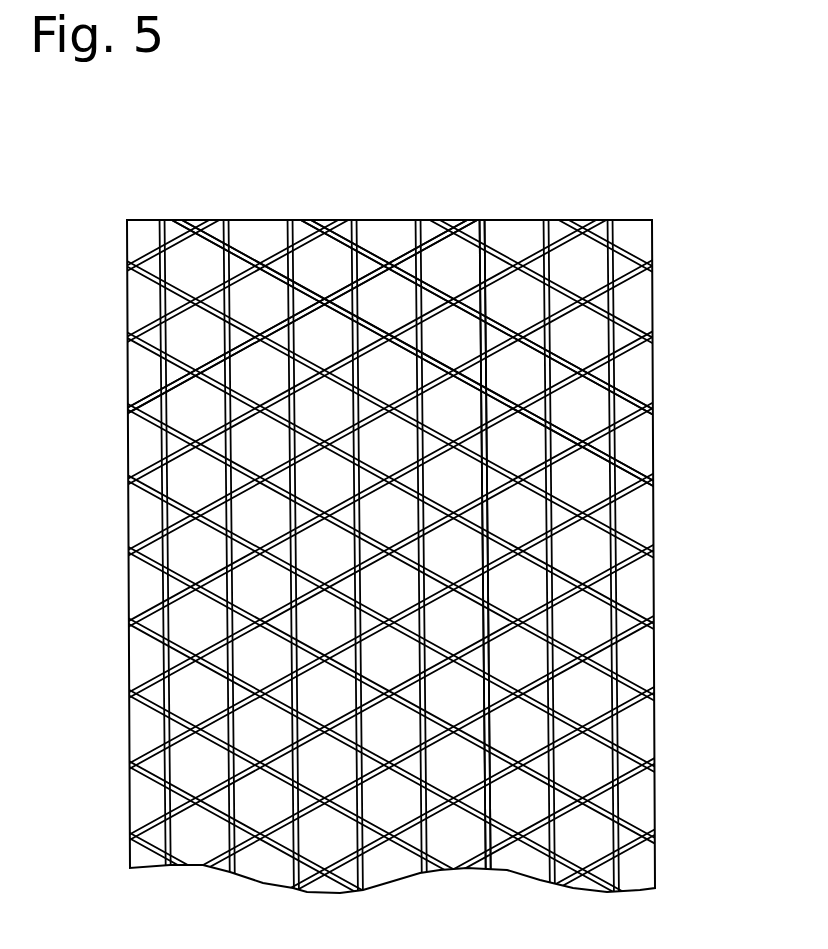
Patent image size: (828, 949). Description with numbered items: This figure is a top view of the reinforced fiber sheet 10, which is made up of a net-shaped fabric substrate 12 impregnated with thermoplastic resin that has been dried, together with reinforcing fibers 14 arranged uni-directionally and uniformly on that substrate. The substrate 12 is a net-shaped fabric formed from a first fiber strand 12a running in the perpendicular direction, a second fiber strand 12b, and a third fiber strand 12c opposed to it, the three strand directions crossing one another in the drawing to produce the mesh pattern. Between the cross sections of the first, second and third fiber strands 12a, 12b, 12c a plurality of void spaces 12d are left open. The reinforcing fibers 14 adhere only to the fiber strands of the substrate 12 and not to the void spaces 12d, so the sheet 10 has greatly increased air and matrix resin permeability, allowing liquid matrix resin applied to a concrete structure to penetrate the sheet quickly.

The reinforced fiber sheet 10 is at (645, 199).
The net-shaped fabric substrate 12 is at (616, 362).
The first fiber strand 12a is at (487, 258).
The second fiber strand 12b is at (371, 303).
The third fiber strand 12c is at (441, 291).
The void spaces 12d is at (336, 301).
The reinforcing fibers 14 is at (653, 302).